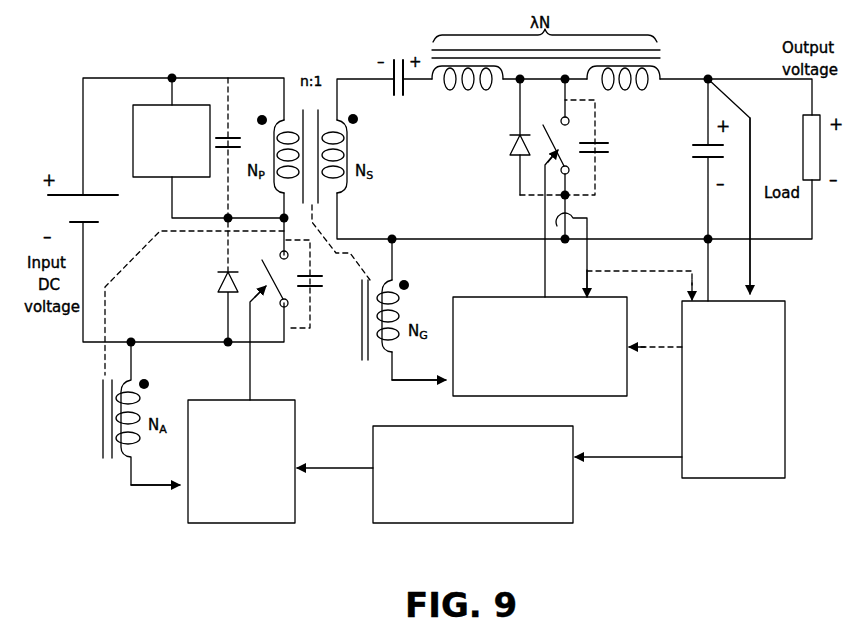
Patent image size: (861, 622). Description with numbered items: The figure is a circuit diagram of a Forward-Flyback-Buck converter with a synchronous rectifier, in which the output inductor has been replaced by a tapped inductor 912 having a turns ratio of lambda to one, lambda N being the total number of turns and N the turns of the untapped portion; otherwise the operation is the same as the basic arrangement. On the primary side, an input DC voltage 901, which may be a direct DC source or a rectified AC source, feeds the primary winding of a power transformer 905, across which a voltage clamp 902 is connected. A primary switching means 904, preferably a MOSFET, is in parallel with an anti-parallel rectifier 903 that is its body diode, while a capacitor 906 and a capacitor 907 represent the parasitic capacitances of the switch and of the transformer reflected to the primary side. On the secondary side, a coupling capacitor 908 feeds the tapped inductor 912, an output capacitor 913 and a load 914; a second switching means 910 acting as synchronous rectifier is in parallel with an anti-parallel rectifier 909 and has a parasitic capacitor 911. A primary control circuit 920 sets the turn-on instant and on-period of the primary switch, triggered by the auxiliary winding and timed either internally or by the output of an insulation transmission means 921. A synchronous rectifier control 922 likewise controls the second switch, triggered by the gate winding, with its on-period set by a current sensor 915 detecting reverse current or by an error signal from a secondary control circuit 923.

The input DC voltage 901 is at (78, 195).
The voltage clamp 902 is at (190, 105).
The anti-parallel rectifier 903 is at (220, 282).
The primary switching means 904 is at (286, 308).
The power transformer 905 is at (320, 108).
The capacitor 906 is at (226, 150).
The capacitor 907 is at (322, 283).
The coupling capacitor 908 is at (402, 60).
The anti-parallel rectifier 909 is at (518, 143).
The second switching means 910 is at (568, 147).
The capacitor 911 is at (605, 152).
The tapped inductor 912 is at (666, 52).
The output capacitor 913 is at (700, 160).
The load 914 is at (818, 180).
The current sensor 915 is at (557, 222).
The primary control circuit 920 is at (252, 523).
The insulation transmission means 921 is at (483, 523).
The synchronous rectifier control 922 is at (627, 377).
The secondary control circuit 923 is at (738, 478).